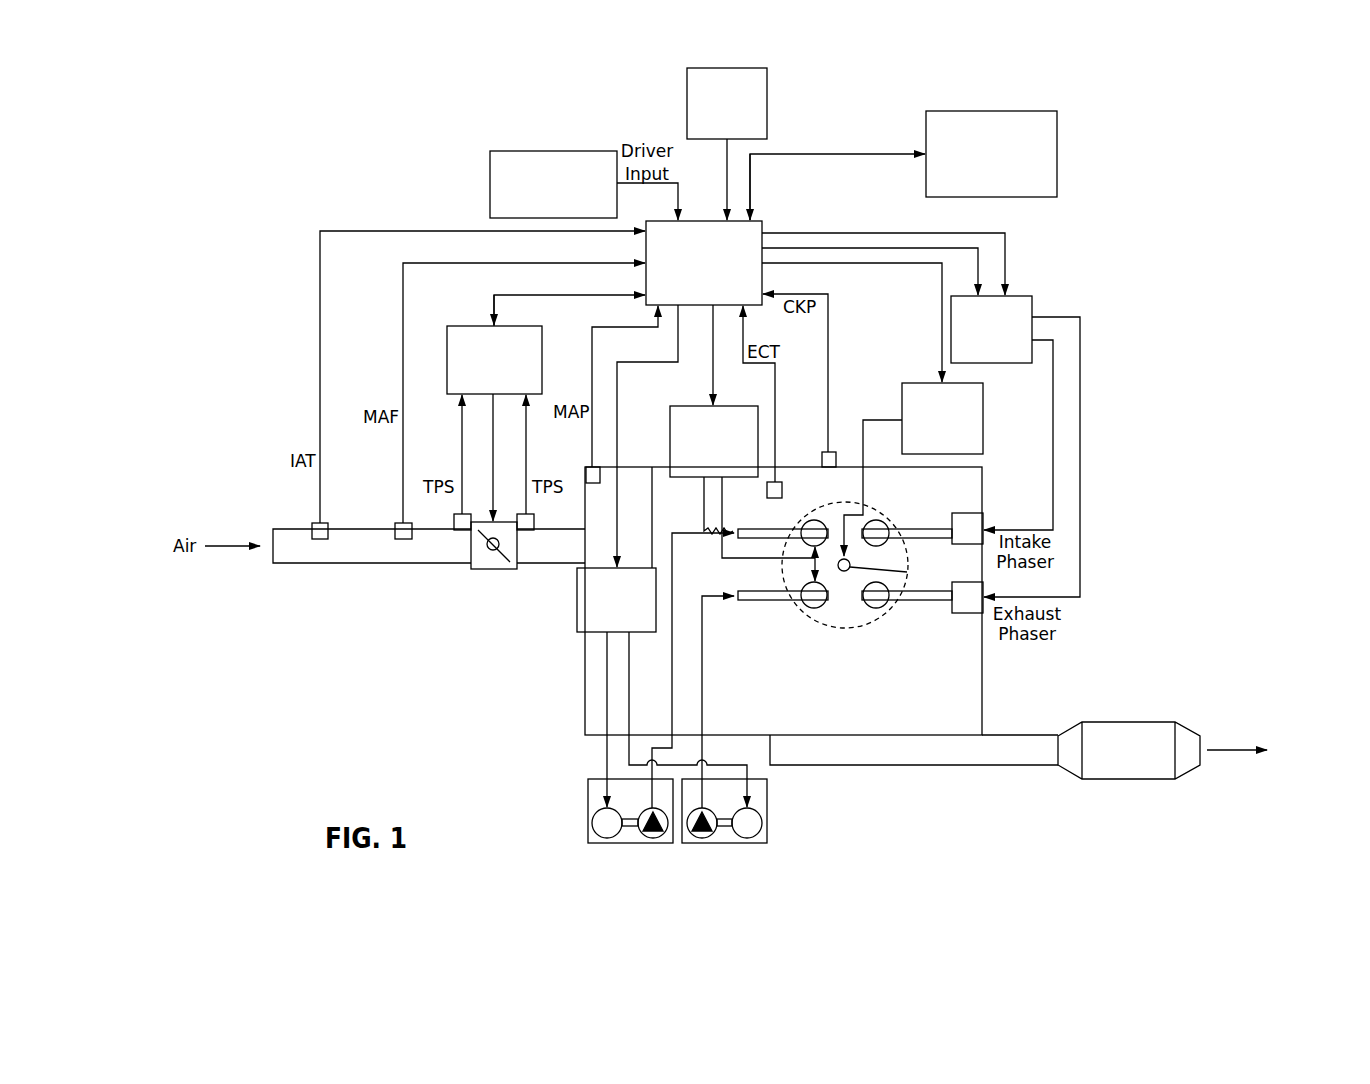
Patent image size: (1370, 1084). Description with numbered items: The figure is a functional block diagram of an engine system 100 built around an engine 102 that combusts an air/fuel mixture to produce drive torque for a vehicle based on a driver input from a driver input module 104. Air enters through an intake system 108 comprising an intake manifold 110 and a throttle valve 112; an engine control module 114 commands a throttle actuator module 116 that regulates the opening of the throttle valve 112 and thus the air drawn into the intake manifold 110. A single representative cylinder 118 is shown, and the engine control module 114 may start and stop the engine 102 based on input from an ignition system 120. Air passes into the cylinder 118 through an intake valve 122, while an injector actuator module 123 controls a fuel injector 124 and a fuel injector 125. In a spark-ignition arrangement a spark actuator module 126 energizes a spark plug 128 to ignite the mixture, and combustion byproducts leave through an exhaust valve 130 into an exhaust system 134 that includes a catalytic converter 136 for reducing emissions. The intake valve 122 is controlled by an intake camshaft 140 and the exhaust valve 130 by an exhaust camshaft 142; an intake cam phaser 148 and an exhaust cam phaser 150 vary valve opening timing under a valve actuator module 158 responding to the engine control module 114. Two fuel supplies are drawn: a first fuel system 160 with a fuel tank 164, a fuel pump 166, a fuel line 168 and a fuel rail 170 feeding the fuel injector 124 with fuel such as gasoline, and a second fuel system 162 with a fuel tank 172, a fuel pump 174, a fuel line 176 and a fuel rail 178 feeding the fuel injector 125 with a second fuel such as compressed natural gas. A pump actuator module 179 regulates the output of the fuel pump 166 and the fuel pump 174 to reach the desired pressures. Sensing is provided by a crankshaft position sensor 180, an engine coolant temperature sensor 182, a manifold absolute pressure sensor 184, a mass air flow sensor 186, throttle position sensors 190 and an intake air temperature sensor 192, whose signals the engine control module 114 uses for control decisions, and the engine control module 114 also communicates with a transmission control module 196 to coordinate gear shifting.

The engine system 100 is at (212, 92).
The engine 102 is at (982, 478).
The driver input module 104 is at (490, 175).
The intake system 108 is at (437, 647).
The intake manifold 110 is at (583, 677).
The throttle valve 112 is at (490, 569).
The engine control module 114 is at (762, 228).
The throttle actuator module 116 is at (468, 326).
The cylinder 118 is at (797, 605).
The ignition system 120 is at (767, 102).
The intake valve 122 is at (876, 520).
The injector actuator module 123 is at (730, 406).
The fuel injector 124 is at (814, 520).
The fuel injector 125 is at (814, 608).
The spark actuator module 126 is at (983, 418).
The spark plug 128 is at (907, 572).
The exhaust valve 130 is at (873, 608).
The exhaust system 134 is at (1157, 810).
The catalytic converter 136 is at (1130, 722).
The intake camshaft 140 is at (928, 529).
The exhaust camshaft 142 is at (928, 600).
The intake cam phaser 148 is at (968, 513).
The exhaust cam phaser 150 is at (968, 613).
The valve actuator module 158 is at (1032, 310).
The first fuel system 160 is at (553, 820).
The second fuel system 162 is at (822, 819).
The fuel tank 164 is at (588, 810).
The fuel pump 166 is at (630, 828).
The fuel line 168 is at (673, 565).
The fuel rail 170 is at (775, 529).
The fuel tank 172 is at (767, 810).
The fuel pump 174 is at (725, 828).
The fuel line 176 is at (703, 640).
The fuel rail 178 is at (775, 600).
The pump actuator module 179 is at (577, 602).
The crankshaft position sensor 180 is at (833, 452).
The engine coolant temperature sensor 182 is at (782, 482).
The manifold absolute pressure sensor 184 is at (592, 467).
The mass air flow sensor 186 is at (398, 523).
The throttle position sensor 190 is at (462, 533).
The intake air temperature sensor 192 is at (314, 523).
The transmission control module 196 is at (991, 111).